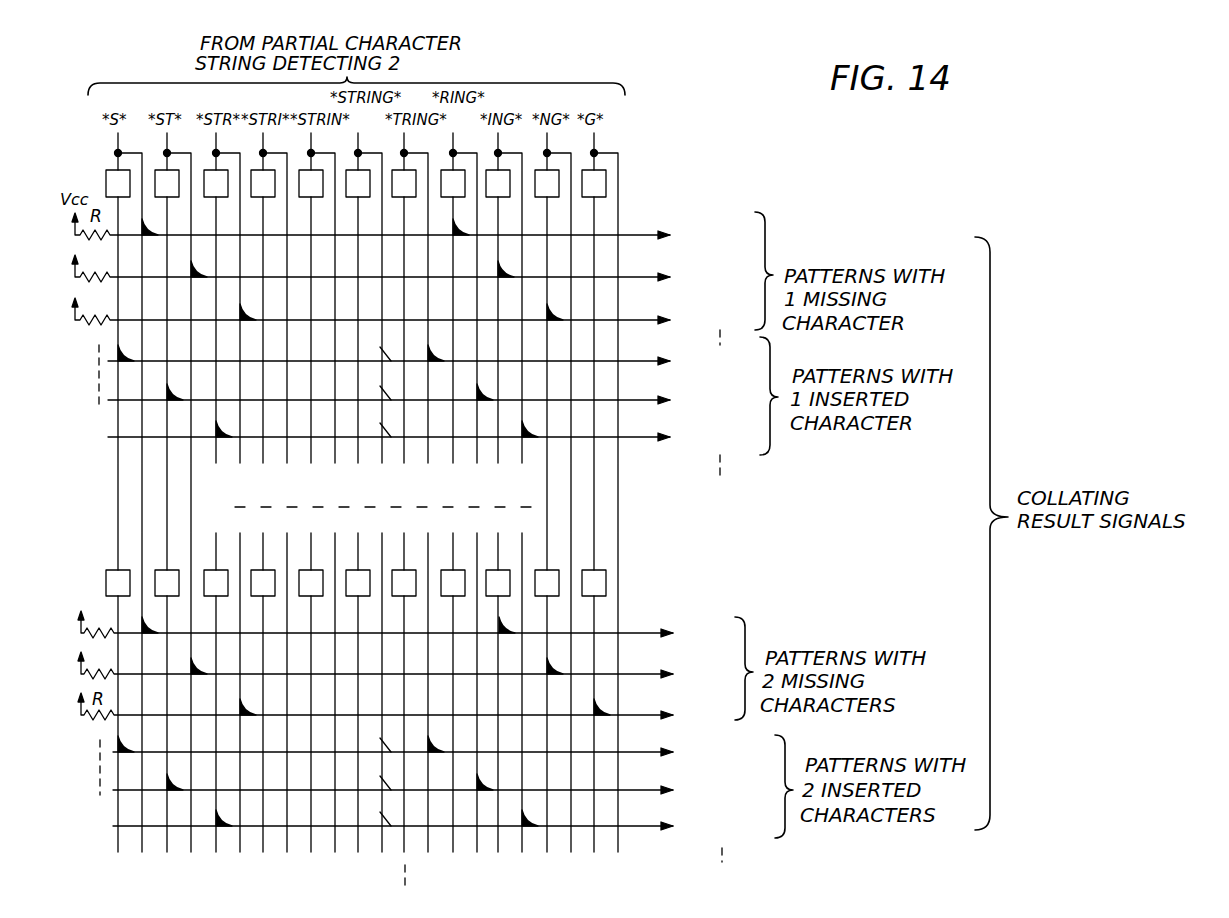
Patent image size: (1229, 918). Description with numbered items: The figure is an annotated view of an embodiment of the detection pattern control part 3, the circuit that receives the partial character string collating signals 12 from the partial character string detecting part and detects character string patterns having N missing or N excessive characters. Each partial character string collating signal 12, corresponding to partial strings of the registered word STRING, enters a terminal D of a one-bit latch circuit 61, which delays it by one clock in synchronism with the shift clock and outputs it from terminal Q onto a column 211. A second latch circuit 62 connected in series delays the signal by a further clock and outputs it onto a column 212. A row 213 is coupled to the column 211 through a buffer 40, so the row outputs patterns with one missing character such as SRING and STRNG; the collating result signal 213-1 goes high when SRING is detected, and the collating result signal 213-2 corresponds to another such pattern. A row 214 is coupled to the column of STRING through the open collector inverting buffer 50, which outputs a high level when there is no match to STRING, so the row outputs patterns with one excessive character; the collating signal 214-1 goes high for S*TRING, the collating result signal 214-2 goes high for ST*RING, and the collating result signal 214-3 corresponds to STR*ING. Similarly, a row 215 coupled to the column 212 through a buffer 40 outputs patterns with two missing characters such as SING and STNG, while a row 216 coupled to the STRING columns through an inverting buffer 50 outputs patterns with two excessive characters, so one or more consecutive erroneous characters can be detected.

The detection pattern control part 3 is at (729, 118).
The partial character string collating signal 12 is at (118, 140).
The latch circuit 61 is at (106, 175).
The latch circuit 62 is at (106, 572).
The column 211 is at (594, 205).
The column 212 is at (118, 605).
The buffer 40 is at (147, 232).
The inverting buffer 50 is at (389, 352).
The row 213 is at (404, 271).
The collating result signal 213-1 is at (401, 229).
The collating result signal 213-2 is at (401, 270).
The row 214 is at (429, 398).
The collating signal 214-1 is at (428, 352).
The collating result signal 214-2 is at (429, 393).
The collating result signal 214-3 is at (429, 445).
The row 215 is at (636, 636).
The row 216 is at (640, 790).